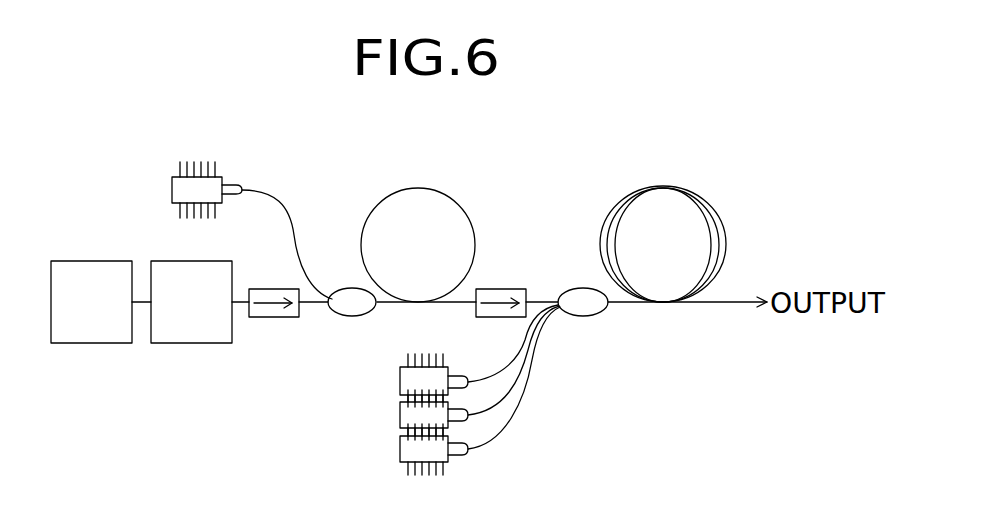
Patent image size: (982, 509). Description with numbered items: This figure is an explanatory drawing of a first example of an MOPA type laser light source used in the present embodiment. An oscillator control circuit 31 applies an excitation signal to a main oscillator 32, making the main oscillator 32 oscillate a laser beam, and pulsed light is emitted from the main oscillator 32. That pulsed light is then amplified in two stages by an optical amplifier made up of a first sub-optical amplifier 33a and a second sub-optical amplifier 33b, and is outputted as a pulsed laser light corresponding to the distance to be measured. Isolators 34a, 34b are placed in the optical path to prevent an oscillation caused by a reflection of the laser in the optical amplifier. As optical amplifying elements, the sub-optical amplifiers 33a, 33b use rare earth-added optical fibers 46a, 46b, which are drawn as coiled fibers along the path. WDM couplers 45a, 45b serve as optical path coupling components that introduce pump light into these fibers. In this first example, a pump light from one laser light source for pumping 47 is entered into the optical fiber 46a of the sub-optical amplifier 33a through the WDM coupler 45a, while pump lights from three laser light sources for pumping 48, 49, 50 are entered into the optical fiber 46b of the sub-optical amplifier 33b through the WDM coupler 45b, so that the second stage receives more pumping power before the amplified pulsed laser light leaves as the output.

The oscillator control circuit 31 is at (88, 261).
The main oscillator 32 is at (193, 261).
The sub-optical amplifier 33a is at (455, 204).
The sub-optical amplifier 33b is at (713, 207).
The isolator 34a is at (275, 318).
The isolator 34b is at (497, 288).
The WDM coupler 45a is at (343, 288).
The WDM coupler 45b is at (587, 317).
The rare earth-added optical fiber 46a is at (462, 208).
The rare earth-added optical fiber 46b is at (726, 246).
The laser light source for pumping 47 is at (172, 192).
The laser light source for pumping 48 is at (400, 380).
The laser light source for pumping 49 is at (400, 415).
The laser light source for pumping 50 is at (400, 452).